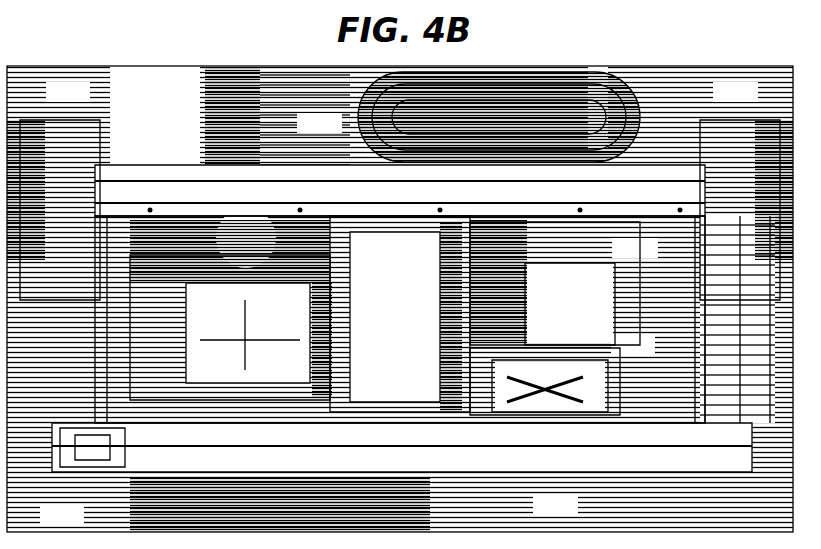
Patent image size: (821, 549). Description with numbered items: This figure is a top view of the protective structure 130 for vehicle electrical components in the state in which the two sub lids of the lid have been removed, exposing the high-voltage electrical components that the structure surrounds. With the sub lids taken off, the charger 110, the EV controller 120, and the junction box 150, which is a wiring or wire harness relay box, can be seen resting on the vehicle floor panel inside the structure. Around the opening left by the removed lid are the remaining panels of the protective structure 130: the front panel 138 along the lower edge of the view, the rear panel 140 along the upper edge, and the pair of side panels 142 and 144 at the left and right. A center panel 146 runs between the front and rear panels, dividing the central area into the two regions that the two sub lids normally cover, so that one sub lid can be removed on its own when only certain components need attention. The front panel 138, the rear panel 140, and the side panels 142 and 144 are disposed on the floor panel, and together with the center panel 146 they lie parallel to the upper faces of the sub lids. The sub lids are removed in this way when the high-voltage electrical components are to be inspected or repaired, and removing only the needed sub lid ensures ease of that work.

The charger 110 is at (256, 358).
The EV controller 120 is at (612, 290).
The protective structure 130 is at (118, 488).
The front panel 138 is at (566, 458).
The rear panel 140 is at (252, 185).
The side panel 142 is at (72, 172).
The side panel 144 is at (735, 172).
The center panel 146 is at (382, 372).
The junction box 150 is at (606, 384).